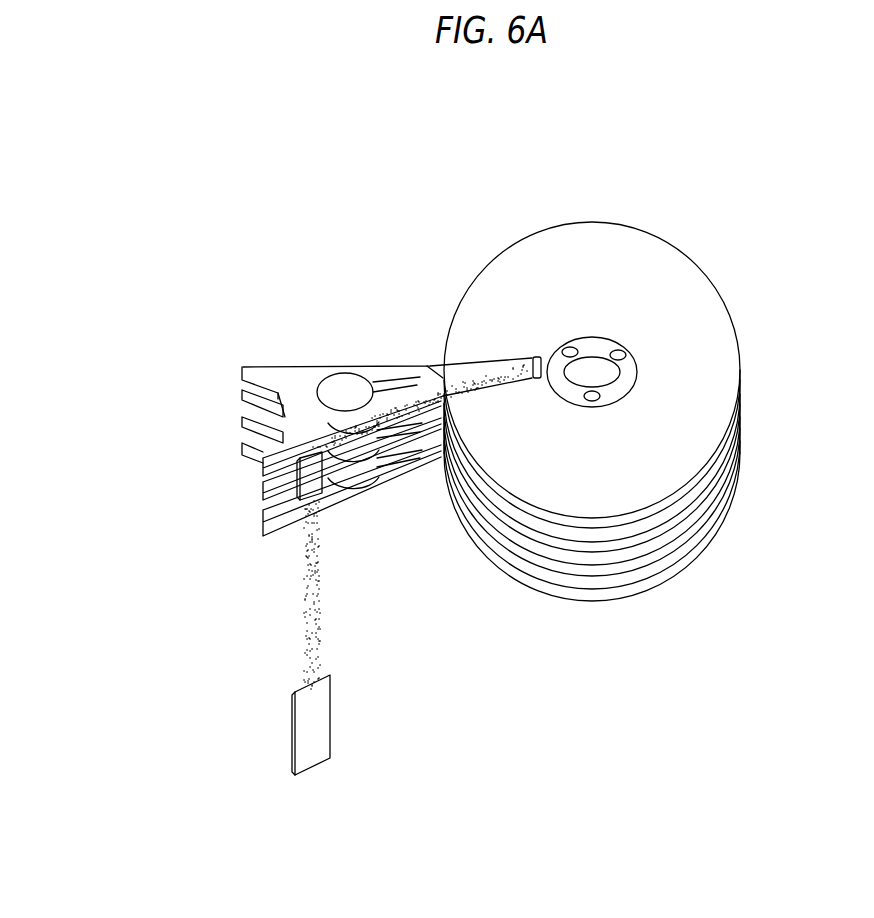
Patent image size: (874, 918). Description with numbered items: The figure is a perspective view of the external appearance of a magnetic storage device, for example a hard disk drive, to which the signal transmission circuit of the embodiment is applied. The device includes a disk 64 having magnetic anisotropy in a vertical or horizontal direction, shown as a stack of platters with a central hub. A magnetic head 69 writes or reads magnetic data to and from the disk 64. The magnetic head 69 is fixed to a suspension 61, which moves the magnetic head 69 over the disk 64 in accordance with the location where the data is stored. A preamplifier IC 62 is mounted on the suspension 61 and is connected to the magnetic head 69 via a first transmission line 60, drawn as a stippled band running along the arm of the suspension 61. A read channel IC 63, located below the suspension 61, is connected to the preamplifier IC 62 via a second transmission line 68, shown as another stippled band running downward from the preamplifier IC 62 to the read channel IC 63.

The transmission line (1) 60 is at (443, 372).
The suspension 61 is at (263, 370).
The preamplifier IC 62 is at (322, 488).
The read channel IC 63 is at (315, 728).
The disk 64 is at (690, 275).
The transmission line (2) 68 is at (305, 622).
The magnetic head 69 is at (537, 355).